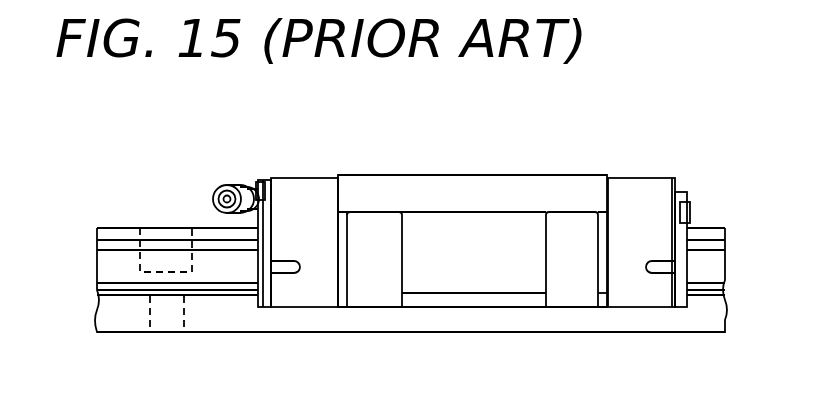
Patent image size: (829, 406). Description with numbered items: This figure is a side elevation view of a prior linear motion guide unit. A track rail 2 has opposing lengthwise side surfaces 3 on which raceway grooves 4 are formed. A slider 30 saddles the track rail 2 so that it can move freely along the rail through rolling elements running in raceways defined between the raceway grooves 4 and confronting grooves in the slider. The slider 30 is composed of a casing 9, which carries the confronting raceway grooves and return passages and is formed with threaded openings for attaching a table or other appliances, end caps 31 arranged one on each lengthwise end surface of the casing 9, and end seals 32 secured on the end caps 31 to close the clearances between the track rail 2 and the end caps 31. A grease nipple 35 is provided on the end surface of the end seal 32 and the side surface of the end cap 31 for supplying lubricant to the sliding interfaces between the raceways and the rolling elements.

The track rail 2 is at (133, 240).
The side surface 3 is at (225, 290).
The raceway groove 4 is at (127, 245).
The casing 9 is at (452, 193).
The slider 30 is at (393, 175).
The end cap 31 is at (318, 200).
The end seal 32 is at (276, 194).
The grease nipple 35 is at (232, 186).